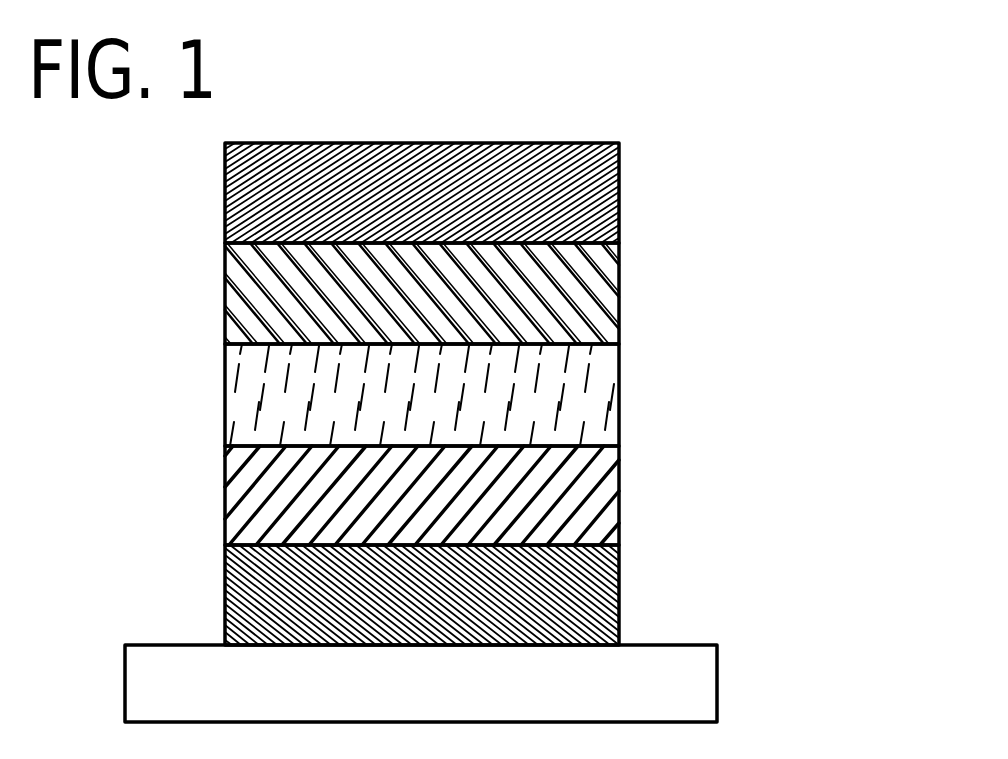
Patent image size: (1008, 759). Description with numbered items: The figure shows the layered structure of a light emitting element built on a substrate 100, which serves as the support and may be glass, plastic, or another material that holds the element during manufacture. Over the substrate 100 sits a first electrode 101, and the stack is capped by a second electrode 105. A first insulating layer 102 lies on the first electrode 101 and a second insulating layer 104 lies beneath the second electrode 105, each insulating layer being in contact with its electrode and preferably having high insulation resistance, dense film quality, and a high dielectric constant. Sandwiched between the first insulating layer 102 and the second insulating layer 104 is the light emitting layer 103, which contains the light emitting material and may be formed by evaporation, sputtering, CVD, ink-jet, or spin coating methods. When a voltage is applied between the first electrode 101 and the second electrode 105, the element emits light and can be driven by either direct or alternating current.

The substrate 100 is at (692, 685).
The first electrode 101 is at (595, 600).
The first insulating layer 102 is at (595, 500).
The light emitting layer 103 is at (595, 400).
The second insulating layer 104 is at (595, 300).
The second electrode 105 is at (600, 197).